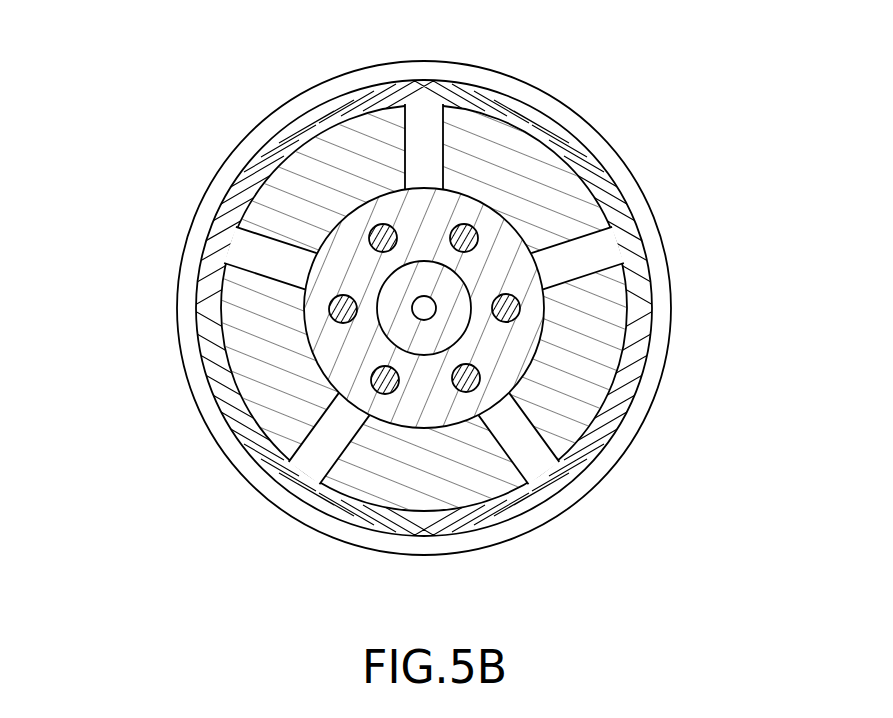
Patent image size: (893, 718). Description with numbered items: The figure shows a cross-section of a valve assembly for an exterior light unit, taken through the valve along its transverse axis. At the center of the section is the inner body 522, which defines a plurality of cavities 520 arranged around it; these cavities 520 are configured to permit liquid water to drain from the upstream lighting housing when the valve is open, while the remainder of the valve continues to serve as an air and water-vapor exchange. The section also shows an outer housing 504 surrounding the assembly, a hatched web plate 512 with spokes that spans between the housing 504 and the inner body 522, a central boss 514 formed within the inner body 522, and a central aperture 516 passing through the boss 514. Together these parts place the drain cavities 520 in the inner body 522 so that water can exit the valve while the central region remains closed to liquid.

The housing 504 is at (202, 262).
The web plate 512 is at (530, 170).
The boss 514 is at (470, 332).
The central aperture 516 is at (433, 303).
The cavities 520 is at (375, 391).
The inner body 522 is at (333, 346).